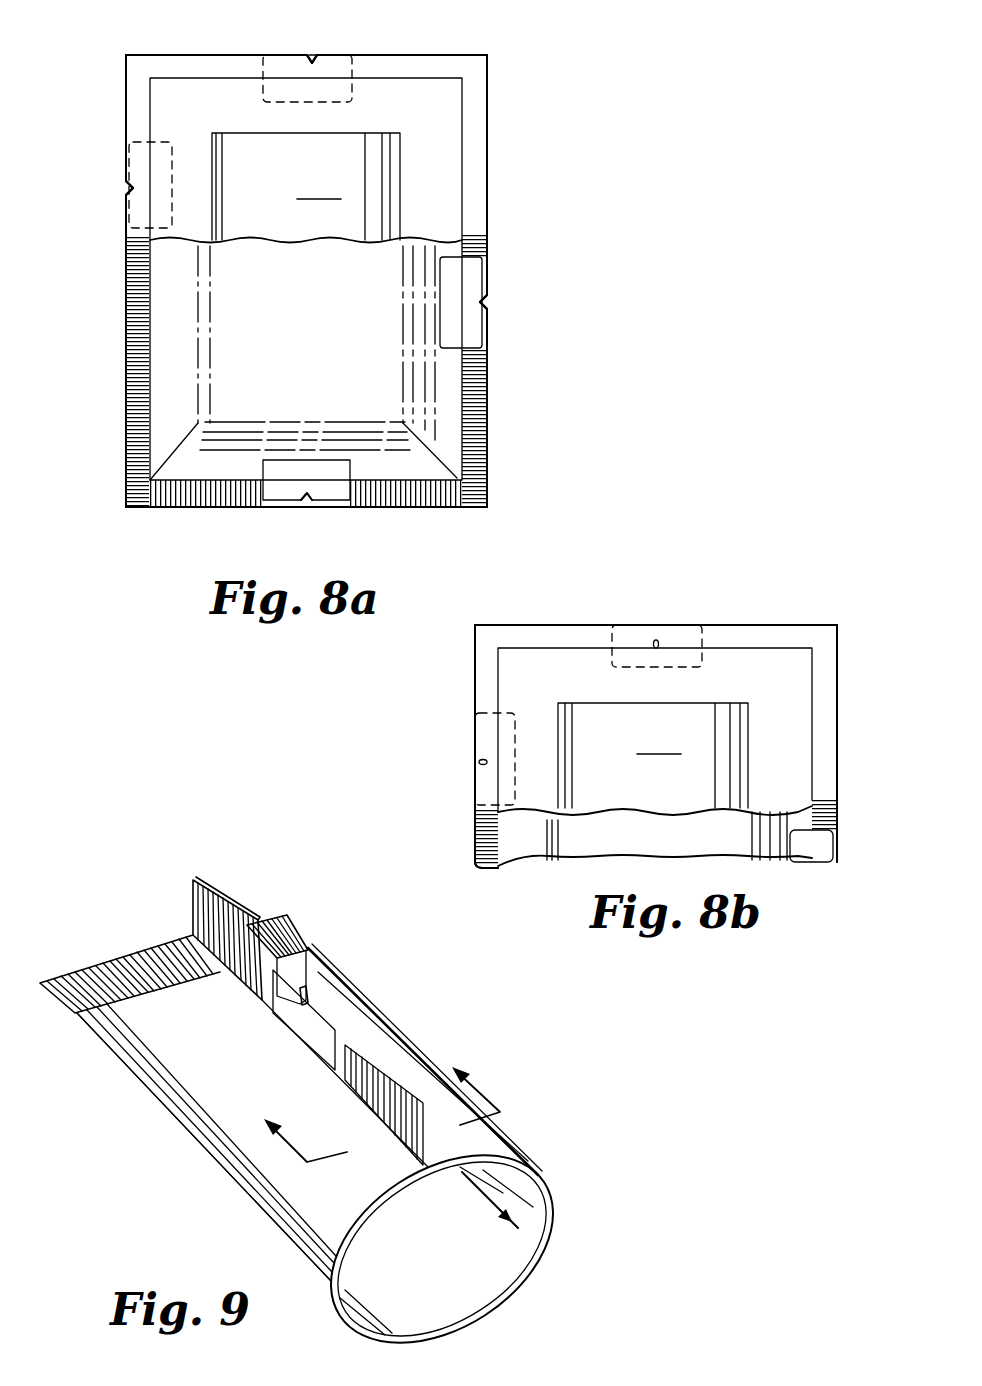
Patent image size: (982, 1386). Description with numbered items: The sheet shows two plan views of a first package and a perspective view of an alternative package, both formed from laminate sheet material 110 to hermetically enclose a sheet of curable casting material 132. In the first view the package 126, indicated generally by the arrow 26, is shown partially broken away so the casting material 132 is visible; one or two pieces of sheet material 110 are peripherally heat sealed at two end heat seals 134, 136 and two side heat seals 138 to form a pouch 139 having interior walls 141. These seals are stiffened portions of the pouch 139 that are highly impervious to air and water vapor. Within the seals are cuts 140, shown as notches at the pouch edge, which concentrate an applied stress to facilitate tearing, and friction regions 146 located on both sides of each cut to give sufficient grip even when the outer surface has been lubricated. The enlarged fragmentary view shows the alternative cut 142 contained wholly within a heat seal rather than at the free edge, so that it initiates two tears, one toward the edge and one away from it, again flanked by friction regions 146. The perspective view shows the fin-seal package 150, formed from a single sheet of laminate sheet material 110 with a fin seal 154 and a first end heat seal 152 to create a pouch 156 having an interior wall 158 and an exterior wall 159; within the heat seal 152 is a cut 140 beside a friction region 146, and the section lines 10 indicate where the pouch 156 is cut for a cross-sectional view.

In FIG. 8a, the housing 26 is at (500, 70).
In FIG. 8a, the laminate sheet material 110 is at (453, 246).
In FIG. 8b, the laminate sheet material 110 is at (798, 820).
In FIG. 9, the laminate sheet material 110 is at (503, 1141).
In FIG. 8b, the package 126 is at (800, 599).
In FIG. 8a, the sheet of curable casting material 132 is at (306, 306).
In FIG. 8b, the sheet of curable casting material 132 is at (655, 784).
In FIG. 8a, the end heat seal 134 is at (181, 62).
In FIG. 8b, the end heat seal 134 is at (533, 637).
In FIG. 8a, the end heat seal 136 is at (181, 497).
In FIG. 8a, the side heat seals 138 is at (140, 418).
In FIG. 8a, the pouch 139 is at (126, 327).
In FIG. 8b, the pouch 139 is at (475, 657).
In FIG. 8a, the cut 140 is at (306, 55).
In FIG. 9, the cut 140 is at (178, 947).
In FIG. 8a, the interior walls 141 is at (445, 165).
In FIG. 8b, the interior walls 141 is at (797, 737).
In FIG. 8b, the cut 142 is at (655, 640).
In FIG. 8a, the friction regions 146 is at (330, 45).
In FIG. 8b, the friction regions 146 is at (706, 640).
In FIG. 9, the friction regions 146 is at (290, 1005).
In FIG. 9, the package 150 is at (383, 1004).
In FIG. 9, the first end heat seal 152 is at (268, 918).
In FIG. 9, the fin seal 154 is at (200, 878).
In FIG. 9, the pouch 156 is at (515, 1198).
In FIG. 9, the interior wall 158 is at (520, 1262).
In FIG. 9, the exterior wall 159 is at (236, 1148).
In FIG. 9, the section line 10 is at (385, 1127).